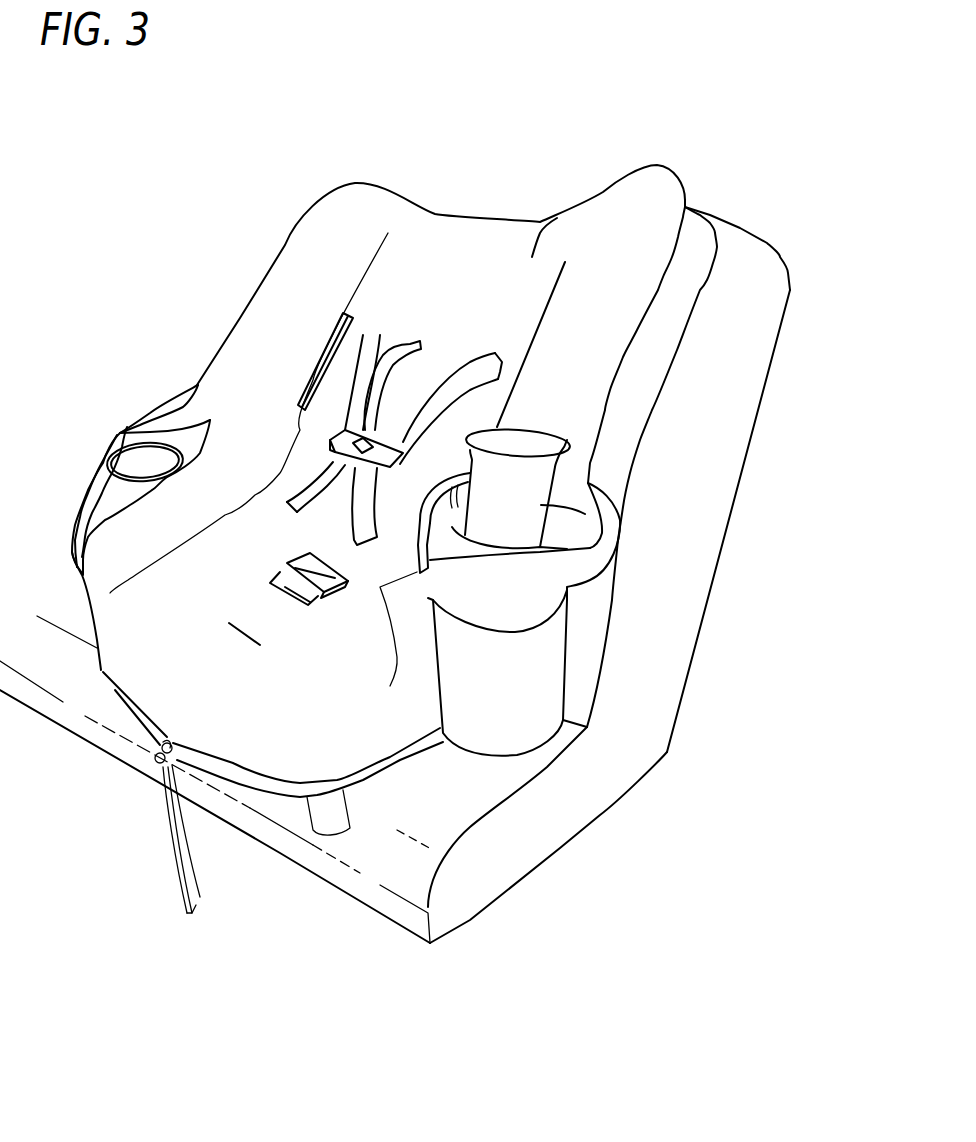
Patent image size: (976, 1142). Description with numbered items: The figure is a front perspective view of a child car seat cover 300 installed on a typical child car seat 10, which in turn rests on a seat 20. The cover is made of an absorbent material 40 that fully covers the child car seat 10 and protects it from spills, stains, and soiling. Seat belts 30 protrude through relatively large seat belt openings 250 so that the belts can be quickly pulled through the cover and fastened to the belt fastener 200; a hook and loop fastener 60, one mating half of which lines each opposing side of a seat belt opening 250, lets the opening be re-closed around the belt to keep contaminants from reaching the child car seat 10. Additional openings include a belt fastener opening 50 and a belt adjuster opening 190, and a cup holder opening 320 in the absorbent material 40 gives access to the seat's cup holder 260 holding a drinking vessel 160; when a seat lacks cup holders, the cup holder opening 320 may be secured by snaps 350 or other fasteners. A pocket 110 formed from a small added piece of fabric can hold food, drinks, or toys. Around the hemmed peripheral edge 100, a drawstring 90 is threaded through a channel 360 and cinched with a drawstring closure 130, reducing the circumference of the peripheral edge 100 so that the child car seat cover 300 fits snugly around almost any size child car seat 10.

The child car seat 10 is at (373, 798).
The seat 20 is at (473, 873).
The seat belt 30 is at (378, 372).
The absorbent material 40 is at (242, 318).
The belt fastener opening 50 is at (290, 600).
The hook and loop fastener 60 is at (340, 322).
The drawstring 90 is at (165, 818).
The peripheral edge 100 is at (123, 712).
The pocket 110 is at (75, 510).
The drawstring closure 130 is at (157, 757).
The drinking vessel 160 is at (530, 495).
The belt adjuster opening 190 is at (226, 623).
The belt fastener 200 is at (380, 447).
The seat belt opening 250 is at (500, 365).
The cup holder 260 is at (145, 444).
The child car seat cover 300 is at (312, 233).
The cup holder opening 320 is at (420, 560).
The snap 350 is at (438, 513).
The channel 360 is at (120, 688).